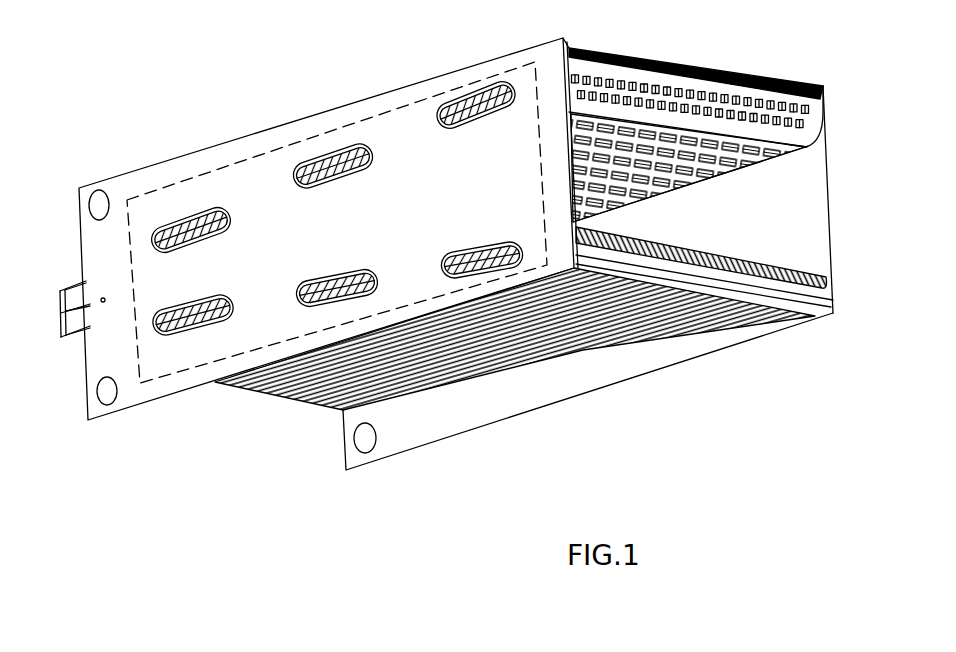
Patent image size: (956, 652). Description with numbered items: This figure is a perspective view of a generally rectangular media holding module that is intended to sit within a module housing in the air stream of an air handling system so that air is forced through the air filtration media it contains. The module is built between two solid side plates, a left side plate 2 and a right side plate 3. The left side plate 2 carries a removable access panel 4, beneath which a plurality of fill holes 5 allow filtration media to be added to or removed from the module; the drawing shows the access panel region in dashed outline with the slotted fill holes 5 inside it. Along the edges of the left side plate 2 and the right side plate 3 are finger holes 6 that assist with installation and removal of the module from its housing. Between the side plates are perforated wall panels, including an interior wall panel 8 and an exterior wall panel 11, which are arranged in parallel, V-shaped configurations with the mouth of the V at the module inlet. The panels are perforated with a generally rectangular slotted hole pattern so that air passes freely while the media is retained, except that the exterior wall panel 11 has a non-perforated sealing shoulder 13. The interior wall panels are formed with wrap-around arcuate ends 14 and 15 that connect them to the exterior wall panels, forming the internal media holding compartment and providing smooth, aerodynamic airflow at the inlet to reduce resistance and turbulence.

The left side plate 2 is at (100, 288).
The right side plate 3 is at (547, 387).
The removable access panel 4 is at (387, 193).
The fill holes 5 is at (210, 208).
The finger holes 6 is at (98, 207).
The interior wall panel 8 is at (670, 157).
The exterior wall panel 11 is at (640, 327).
The sealing shoulder 13 is at (817, 300).
The wrap-around arcuate end 14 is at (693, 112).
The wrap-around arcuate end 15 is at (777, 266).